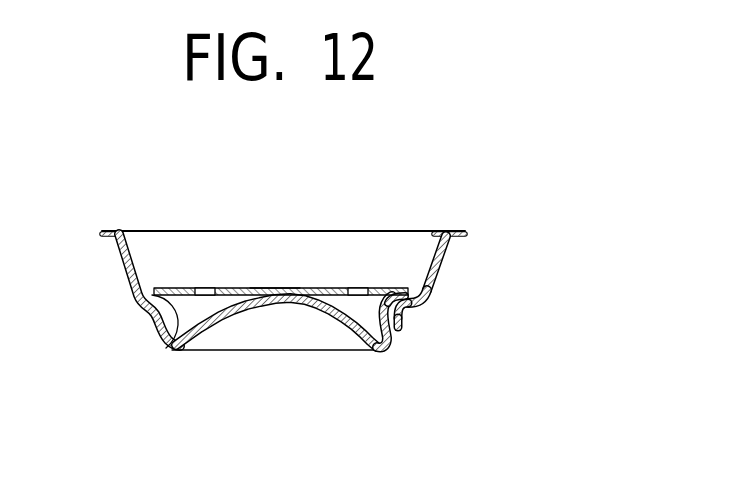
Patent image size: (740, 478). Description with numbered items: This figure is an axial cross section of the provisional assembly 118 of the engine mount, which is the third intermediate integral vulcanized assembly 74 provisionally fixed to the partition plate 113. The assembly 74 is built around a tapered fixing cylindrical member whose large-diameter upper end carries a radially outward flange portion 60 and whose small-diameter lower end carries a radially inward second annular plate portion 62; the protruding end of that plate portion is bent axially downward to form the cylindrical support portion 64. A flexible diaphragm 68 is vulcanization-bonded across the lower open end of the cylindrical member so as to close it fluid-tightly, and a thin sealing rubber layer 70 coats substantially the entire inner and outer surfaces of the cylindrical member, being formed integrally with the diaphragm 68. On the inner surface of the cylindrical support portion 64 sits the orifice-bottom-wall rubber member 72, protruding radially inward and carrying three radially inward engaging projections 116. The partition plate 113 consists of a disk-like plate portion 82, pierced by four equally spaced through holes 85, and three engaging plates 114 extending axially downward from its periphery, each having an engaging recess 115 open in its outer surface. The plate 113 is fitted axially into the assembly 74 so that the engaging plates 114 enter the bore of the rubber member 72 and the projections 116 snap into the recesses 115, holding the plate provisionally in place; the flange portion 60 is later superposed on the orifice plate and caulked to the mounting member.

The flange portion 60 is at (458, 231).
The second annular plate portion 62 is at (416, 306).
The cylindrical support portion 64 is at (406, 336).
The flexible diaphragm 68 is at (220, 322).
The sealing rubber layer 70 is at (430, 296).
The orifice-bottom-wall rubber member 72 is at (168, 347).
The third intermediate integral vulcanized assembly 74 is at (301, 356).
The disk-like plate portion 82 is at (267, 288).
The through holes 85 is at (210, 288).
The partition plate 113 is at (289, 282).
The engaging plates 114 is at (380, 350).
The engaging recess 115 is at (400, 326).
The engaging projections 116 is at (392, 292).
The provisional assembly 118 is at (192, 224).